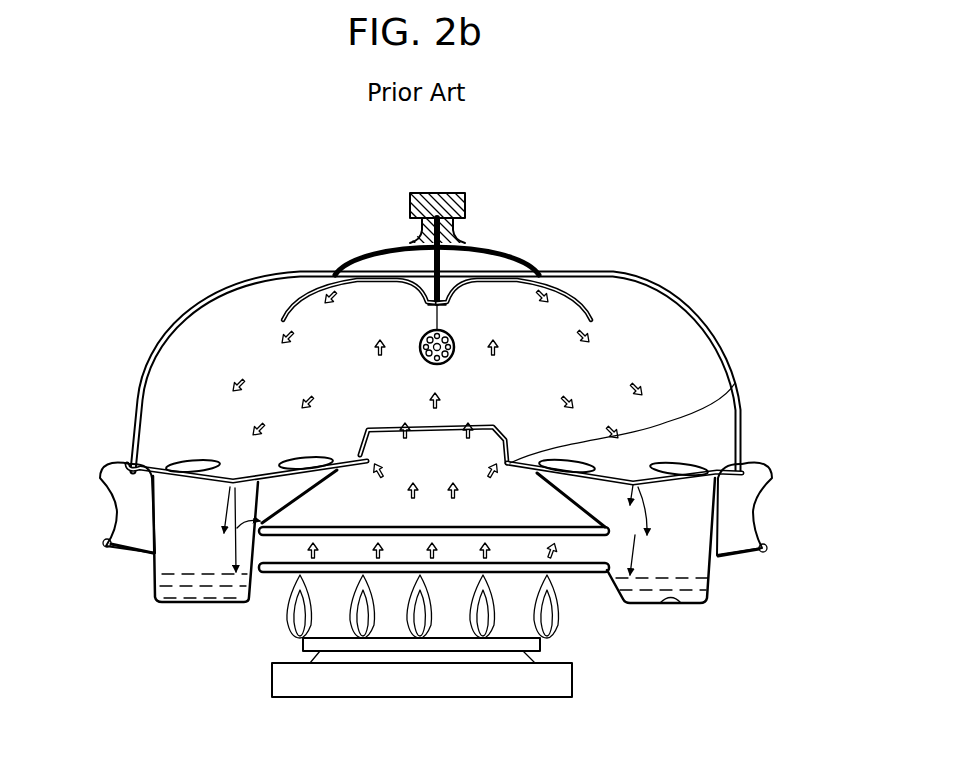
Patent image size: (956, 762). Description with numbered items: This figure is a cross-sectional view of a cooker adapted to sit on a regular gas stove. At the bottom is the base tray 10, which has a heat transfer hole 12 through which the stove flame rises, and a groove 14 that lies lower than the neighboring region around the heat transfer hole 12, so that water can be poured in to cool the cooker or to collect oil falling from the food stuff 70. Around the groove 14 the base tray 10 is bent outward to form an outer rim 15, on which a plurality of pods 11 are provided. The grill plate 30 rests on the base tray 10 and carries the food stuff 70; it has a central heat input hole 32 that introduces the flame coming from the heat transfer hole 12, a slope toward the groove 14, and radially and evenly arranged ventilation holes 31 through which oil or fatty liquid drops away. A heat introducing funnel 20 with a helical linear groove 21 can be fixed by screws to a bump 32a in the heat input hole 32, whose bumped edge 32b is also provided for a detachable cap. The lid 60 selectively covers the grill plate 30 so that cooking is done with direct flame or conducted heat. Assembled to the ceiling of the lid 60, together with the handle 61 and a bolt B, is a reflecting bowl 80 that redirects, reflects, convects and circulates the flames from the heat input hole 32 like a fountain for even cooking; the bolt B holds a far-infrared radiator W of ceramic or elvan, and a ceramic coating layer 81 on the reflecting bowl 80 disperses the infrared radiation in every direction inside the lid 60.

The base tray 10 is at (650, 618).
The pods 11 is at (740, 503).
The heat transfer hole 12 is at (597, 573).
The groove 14 is at (680, 607).
The outer rim 15 is at (743, 553).
The heat introducing funnel 20 is at (233, 530).
The helical linear groove 21 is at (397, 428).
The grill plate 30 is at (370, 440).
The ventilation holes 31 is at (217, 468).
The heat input hole 32 is at (497, 449).
The bump 32a is at (237, 467).
The bumped edge 32b is at (508, 460).
The lid 60 is at (730, 343).
The handle 61 is at (457, 197).
The food stuff 70 is at (673, 467).
The reflecting bowl 80 is at (303, 285).
The ceramic coating layer 81 is at (547, 300).
The bolt B is at (427, 265).
The far-infrared radiator W is at (418, 347).